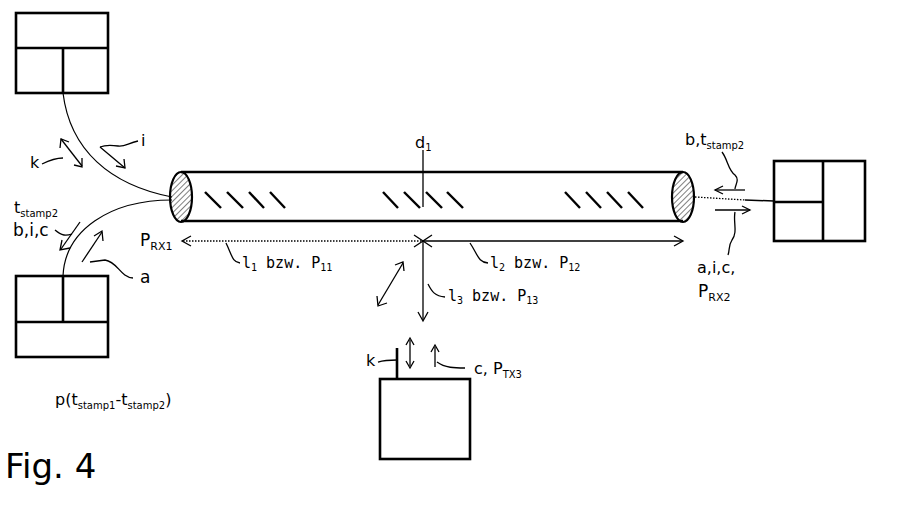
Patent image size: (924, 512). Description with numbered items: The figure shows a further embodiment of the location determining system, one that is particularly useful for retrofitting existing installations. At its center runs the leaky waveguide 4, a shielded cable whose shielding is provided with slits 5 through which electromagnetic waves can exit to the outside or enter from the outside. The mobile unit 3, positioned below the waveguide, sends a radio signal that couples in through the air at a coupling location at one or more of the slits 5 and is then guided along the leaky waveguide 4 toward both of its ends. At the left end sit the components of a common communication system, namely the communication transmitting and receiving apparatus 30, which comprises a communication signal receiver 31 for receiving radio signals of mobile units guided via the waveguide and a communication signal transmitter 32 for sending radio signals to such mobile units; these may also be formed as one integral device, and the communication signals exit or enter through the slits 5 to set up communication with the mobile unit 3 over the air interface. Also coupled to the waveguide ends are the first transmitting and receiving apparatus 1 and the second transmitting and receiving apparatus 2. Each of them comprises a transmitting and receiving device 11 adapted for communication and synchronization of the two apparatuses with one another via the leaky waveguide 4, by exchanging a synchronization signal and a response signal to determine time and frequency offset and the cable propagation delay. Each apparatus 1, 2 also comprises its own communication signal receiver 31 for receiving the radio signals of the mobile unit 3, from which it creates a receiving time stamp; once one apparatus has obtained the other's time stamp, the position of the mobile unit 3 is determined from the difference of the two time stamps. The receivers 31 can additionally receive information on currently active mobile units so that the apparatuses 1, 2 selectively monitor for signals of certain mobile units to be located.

The first transmitting and receiving apparatus 1 is at (90, 357).
The second transmitting and receiving apparatus 2 is at (800, 243).
The mobile unit 3 is at (472, 422).
The leaky waveguide 4 is at (597, 172).
The slits 5 is at (390, 198).
The transmitting and receiving device 11 is at (419, 241).
The communication transmitting and receiving apparatus 30 is at (67, 95).
The communication signal receiver 31 is at (426, 192).
The communication signal transmitter 32 is at (79, 70).